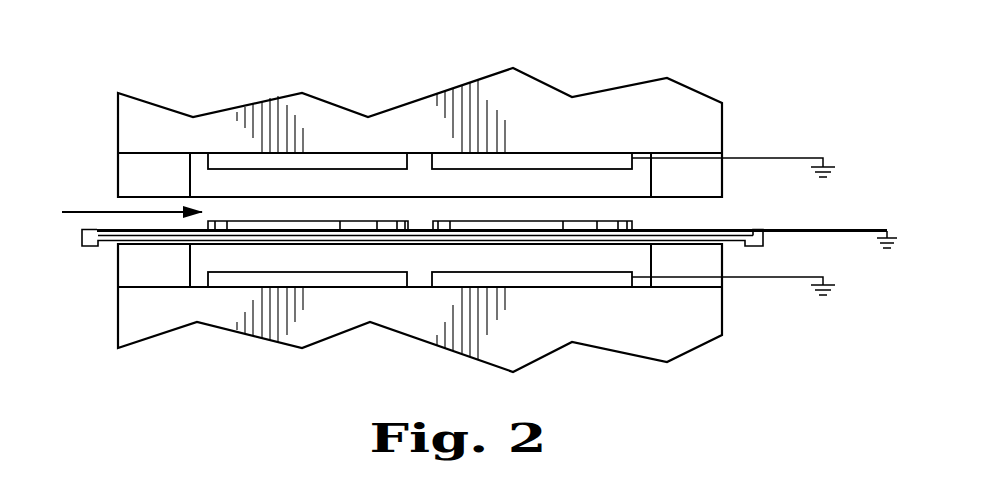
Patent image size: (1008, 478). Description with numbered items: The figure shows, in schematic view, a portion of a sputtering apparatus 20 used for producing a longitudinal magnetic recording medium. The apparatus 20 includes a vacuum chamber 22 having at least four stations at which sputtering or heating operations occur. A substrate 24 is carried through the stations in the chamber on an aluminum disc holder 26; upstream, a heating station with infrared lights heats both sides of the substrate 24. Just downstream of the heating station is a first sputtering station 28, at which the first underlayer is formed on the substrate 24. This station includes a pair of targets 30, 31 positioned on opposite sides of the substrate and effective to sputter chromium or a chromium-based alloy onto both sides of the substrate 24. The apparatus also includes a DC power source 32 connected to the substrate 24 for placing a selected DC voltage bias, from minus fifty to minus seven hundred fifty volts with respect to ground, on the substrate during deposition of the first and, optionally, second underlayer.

The sputtering apparatus 20 is at (326, 98).
The vacuum chamber 22 is at (116, 212).
The substrate 24 is at (478, 228).
The aluminum disc holder 26 is at (112, 242).
The first sputtering station 28 is at (506, 254).
The target 30 is at (580, 281).
The target 31 is at (538, 162).
The DC power source 32 is at (885, 222).